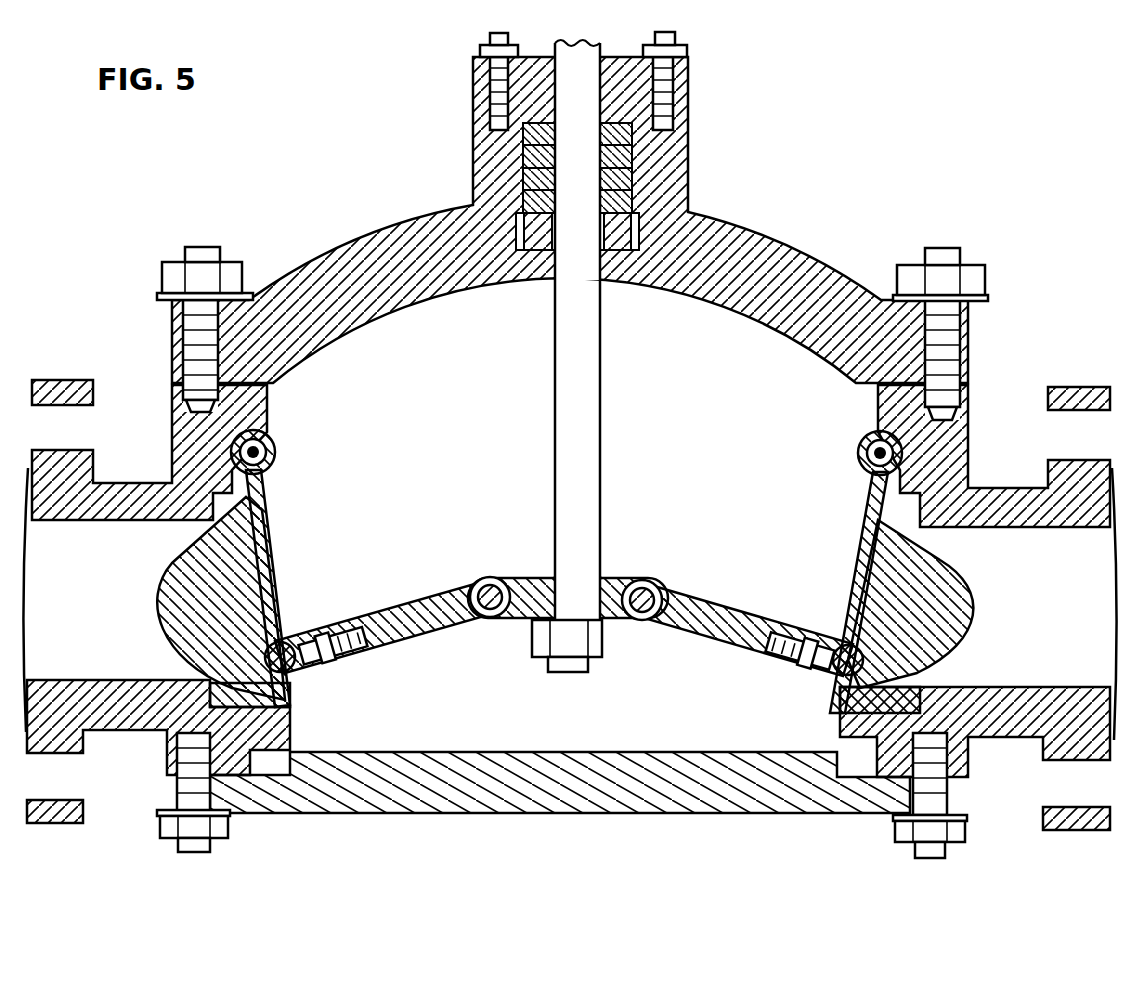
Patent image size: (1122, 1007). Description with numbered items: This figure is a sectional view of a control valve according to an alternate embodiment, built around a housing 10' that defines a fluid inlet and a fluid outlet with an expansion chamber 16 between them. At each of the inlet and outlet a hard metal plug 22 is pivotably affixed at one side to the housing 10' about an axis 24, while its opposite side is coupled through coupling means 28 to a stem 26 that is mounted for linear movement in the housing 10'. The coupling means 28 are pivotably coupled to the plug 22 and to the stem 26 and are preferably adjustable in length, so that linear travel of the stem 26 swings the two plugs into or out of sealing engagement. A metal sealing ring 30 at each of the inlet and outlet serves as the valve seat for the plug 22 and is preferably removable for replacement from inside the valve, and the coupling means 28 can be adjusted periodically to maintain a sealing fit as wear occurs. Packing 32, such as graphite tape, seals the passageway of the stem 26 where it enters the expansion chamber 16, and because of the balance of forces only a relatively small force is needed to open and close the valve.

The housing 10' is at (569, 552).
The expansion chamber 16 is at (730, 467).
The hard metal plug 22 is at (180, 578).
The axis 24 is at (273, 460).
The stem 26 is at (583, 385).
The coupling means 28 is at (435, 620).
The metal sealing ring 30 is at (215, 680).
The packing 32 is at (622, 167).